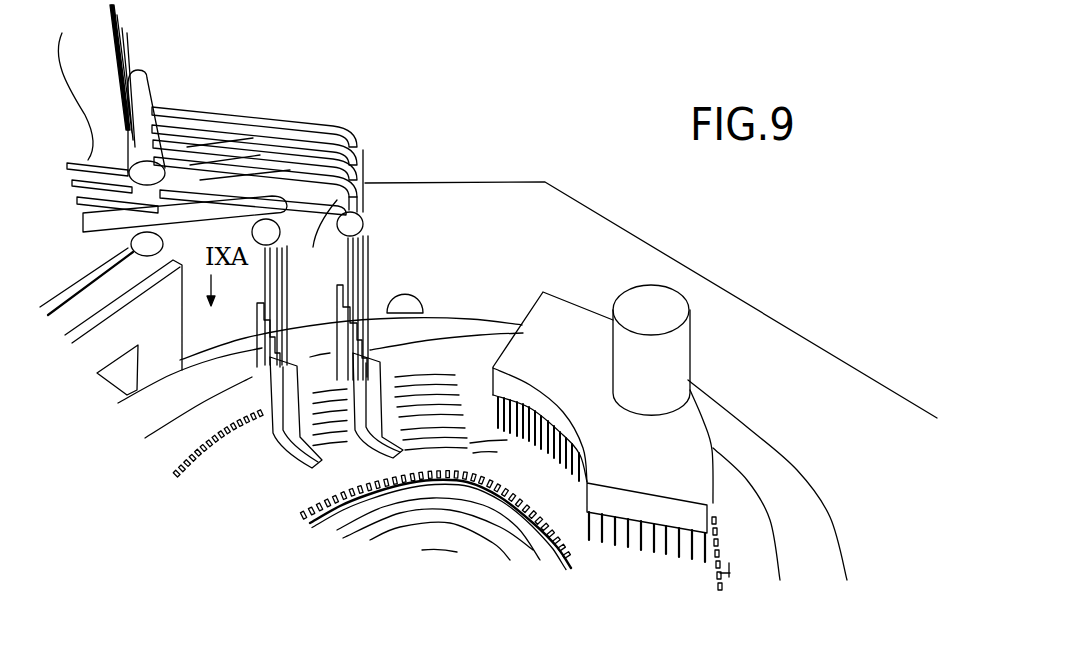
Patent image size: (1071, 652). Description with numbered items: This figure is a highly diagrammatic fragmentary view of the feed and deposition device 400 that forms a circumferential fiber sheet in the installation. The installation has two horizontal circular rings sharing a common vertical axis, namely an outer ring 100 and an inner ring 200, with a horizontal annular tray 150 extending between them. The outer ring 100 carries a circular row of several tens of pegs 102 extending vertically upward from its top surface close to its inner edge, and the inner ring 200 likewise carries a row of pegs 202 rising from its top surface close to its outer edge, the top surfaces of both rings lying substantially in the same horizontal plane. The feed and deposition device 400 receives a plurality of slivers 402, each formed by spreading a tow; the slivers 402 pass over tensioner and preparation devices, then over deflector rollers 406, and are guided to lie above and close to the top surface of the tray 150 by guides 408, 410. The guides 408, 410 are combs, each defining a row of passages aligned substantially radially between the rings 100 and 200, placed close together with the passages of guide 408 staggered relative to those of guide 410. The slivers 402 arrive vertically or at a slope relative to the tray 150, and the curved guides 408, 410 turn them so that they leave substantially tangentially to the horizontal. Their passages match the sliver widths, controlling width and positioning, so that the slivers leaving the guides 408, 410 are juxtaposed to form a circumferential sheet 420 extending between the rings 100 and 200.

The slivers 402 is at (110, 60).
The feed and deposition device 400 is at (390, 270).
The deflector rollers 406 is at (268, 233).
The guide 408 is at (283, 460).
The guide 410 is at (372, 372).
The circumferential sheet 420 is at (455, 407).
The outer ring 100 is at (185, 430).
The tray 150 is at (283, 498).
The inner ring 200 is at (355, 503).
The pegs 202 is at (580, 558).
The pegs 102 is at (700, 573).